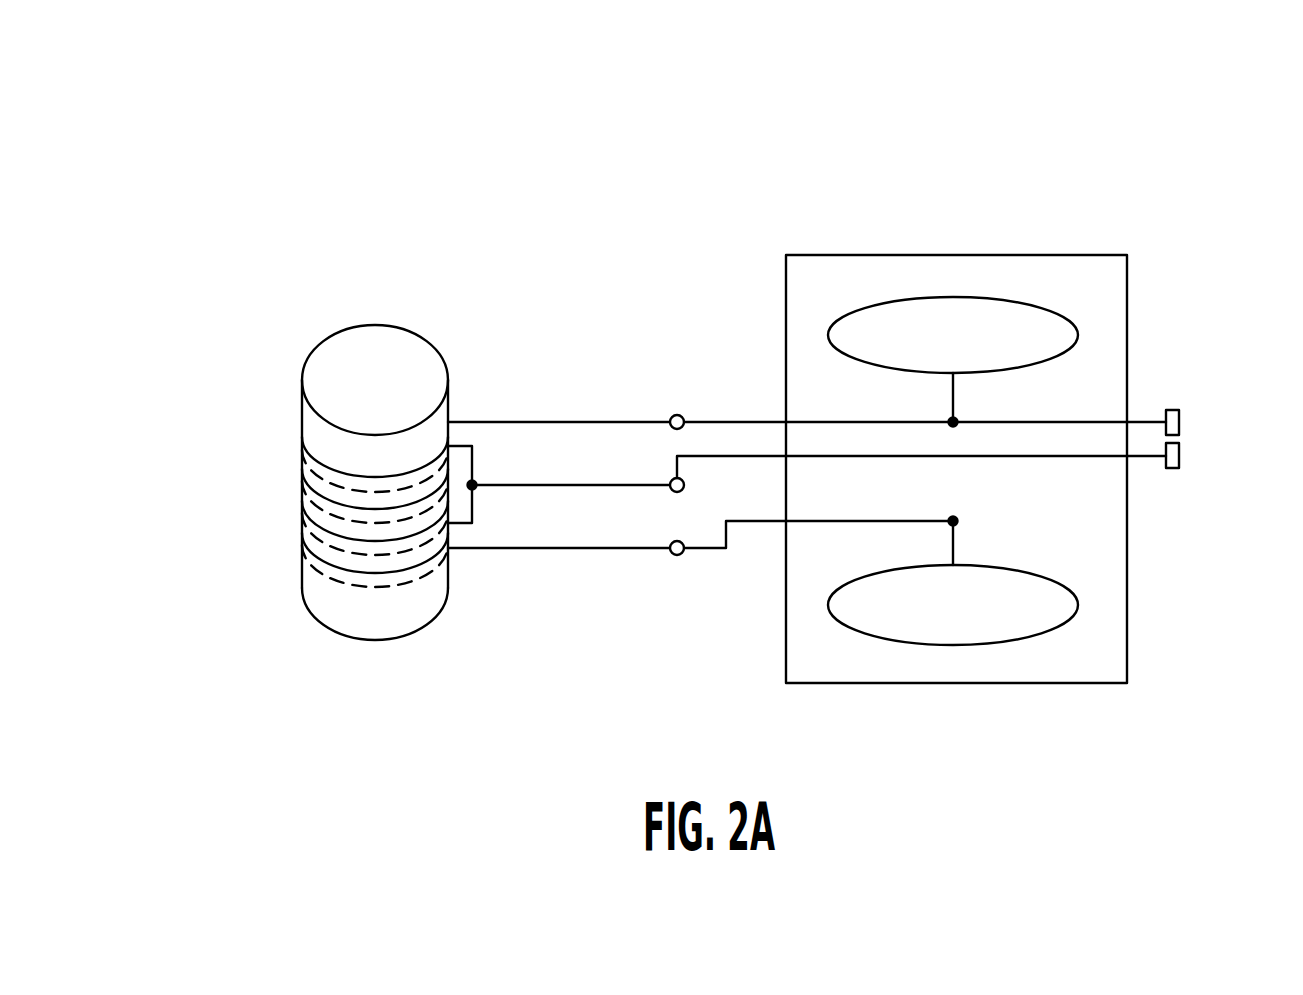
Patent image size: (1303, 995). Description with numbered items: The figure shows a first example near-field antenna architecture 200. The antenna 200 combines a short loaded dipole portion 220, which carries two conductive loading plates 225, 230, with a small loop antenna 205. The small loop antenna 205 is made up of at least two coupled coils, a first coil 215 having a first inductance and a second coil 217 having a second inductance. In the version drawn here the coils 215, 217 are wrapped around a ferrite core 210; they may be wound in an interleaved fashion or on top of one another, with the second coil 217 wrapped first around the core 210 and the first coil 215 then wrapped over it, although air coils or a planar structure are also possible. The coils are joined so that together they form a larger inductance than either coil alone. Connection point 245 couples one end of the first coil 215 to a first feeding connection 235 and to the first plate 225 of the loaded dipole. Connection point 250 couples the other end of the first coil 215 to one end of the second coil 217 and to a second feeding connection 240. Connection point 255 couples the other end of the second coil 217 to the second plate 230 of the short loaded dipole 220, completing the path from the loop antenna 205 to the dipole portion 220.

The near-field antenna architecture 200 is at (147, 131).
The small loop antenna 205 is at (343, 288).
The ferrite core 210 is at (322, 352).
The first coil 215 is at (324, 464).
The second coil 217 is at (330, 577).
The short loaded dipole portion 220 is at (860, 255).
The first conductive loading plate 225 is at (1068, 313).
The second conductive loading plate 230 is at (1079, 603).
The first feeding connection 235 is at (1180, 418).
The second feeding connection 240 is at (1180, 462).
The connection point 245 is at (676, 415).
The connection point 250 is at (684, 487).
The connection point 255 is at (676, 556).